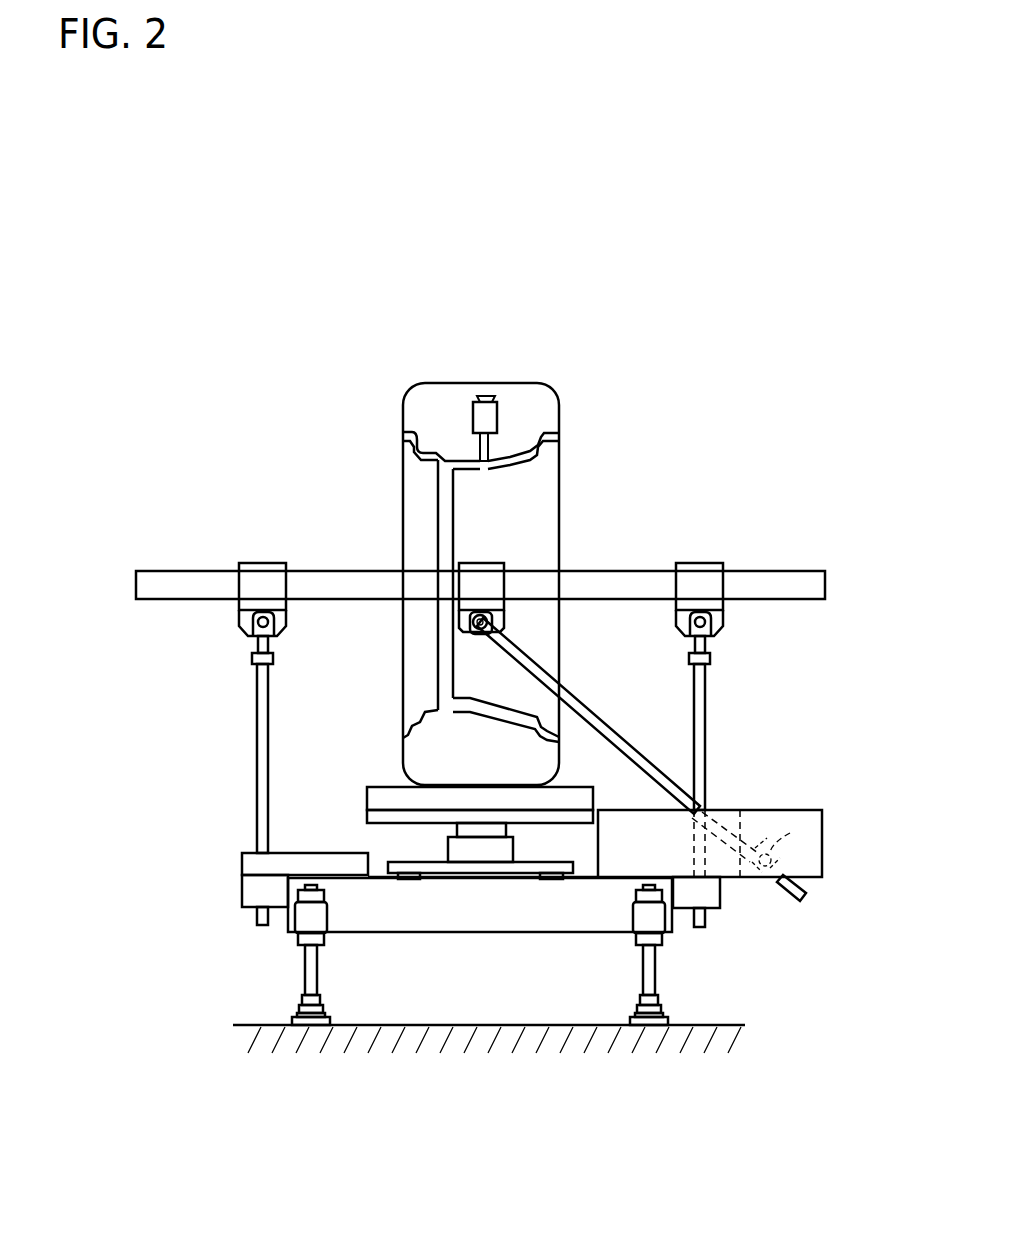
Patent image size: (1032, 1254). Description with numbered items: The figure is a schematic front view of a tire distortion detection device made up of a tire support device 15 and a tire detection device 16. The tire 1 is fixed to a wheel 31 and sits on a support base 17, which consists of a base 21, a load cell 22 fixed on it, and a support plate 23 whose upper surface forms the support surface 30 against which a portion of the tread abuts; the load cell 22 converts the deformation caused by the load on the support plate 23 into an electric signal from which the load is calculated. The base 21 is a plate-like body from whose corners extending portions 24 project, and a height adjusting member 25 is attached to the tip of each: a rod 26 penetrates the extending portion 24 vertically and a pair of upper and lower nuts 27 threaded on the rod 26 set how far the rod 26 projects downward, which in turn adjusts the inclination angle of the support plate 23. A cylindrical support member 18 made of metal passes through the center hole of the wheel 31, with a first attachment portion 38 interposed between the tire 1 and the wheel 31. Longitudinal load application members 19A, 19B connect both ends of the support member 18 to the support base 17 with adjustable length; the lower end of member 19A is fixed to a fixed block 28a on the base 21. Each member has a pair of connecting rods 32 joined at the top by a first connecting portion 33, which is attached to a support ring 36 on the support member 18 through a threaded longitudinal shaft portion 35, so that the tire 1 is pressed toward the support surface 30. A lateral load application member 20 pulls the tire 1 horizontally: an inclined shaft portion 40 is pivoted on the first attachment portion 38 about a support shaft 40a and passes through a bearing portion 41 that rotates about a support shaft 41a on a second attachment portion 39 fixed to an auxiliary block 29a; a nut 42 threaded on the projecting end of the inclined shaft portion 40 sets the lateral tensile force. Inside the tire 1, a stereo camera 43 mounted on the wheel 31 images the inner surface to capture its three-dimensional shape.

The tire 1 is at (560, 386).
The tire support device 15 is at (690, 446).
The tire detection device 16 is at (463, 397).
The support base 17 is at (368, 790).
The support member 18 is at (356, 568).
The longitudinal load application member 19A is at (255, 690).
The longitudinal load application member 19B is at (710, 690).
The lateral load application member 20 is at (786, 886).
The base 21 is at (450, 925).
The load cell 22 is at (446, 850).
The support plate 23 is at (368, 814).
The extending portion 24 is at (302, 920).
The height adjusting member 25 is at (302, 982).
The rod 26 is at (320, 967).
The nut 27 is at (318, 938).
The fixed block 28a is at (255, 858).
The auxiliary block 29a is at (797, 812).
The support surface 30 is at (445, 786).
The wheel 31 is at (432, 480).
The connecting rod 32 is at (256, 735).
The first connecting portion 33 is at (250, 657).
The longitudinal shaft portion 35 is at (260, 646).
The support ring 36 is at (262, 575).
The first attachment portion 38 is at (495, 593).
The second attachment portion 39 is at (764, 820).
The inclined shaft portion 40 is at (624, 742).
The support shaft 40a is at (496, 620).
The bearing portion 41 is at (778, 858).
The support shaft 41a is at (790, 833).
The nut 42 is at (800, 880).
The stereo camera 43 is at (490, 397).